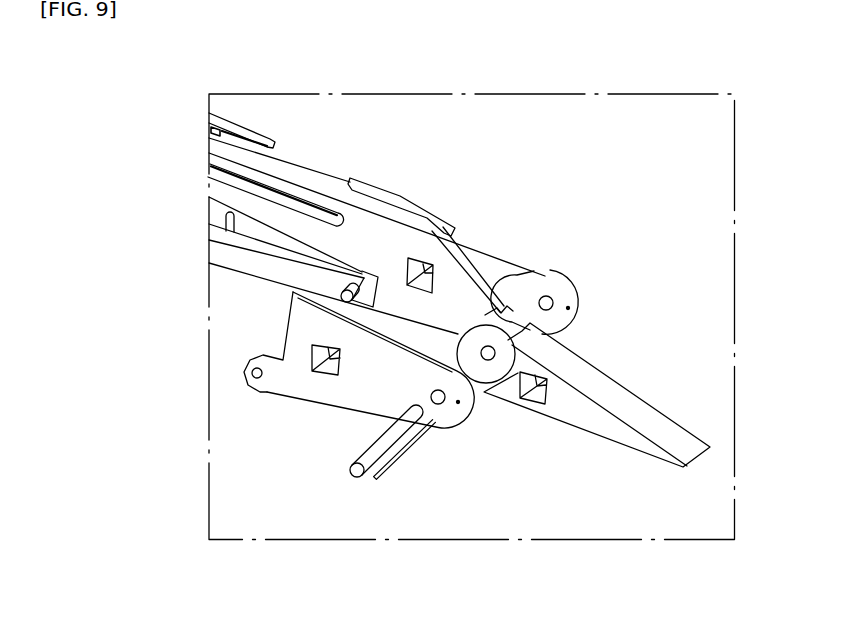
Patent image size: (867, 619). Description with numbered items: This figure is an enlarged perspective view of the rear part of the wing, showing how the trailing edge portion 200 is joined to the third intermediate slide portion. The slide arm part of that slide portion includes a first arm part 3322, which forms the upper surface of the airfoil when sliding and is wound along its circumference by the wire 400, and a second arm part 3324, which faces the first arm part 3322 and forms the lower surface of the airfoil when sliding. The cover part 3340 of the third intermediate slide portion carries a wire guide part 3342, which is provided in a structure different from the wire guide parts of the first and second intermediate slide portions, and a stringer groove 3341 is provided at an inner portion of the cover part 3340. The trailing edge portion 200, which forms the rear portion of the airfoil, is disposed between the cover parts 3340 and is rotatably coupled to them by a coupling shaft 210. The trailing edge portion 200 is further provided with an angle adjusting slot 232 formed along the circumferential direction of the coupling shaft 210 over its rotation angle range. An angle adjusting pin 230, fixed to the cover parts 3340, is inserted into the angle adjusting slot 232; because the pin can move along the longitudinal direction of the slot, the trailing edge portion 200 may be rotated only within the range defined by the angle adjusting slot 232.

The trailing edge portion 200 is at (633, 399).
The coupling shaft 210 is at (357, 467).
The angle adjusting pin 230 is at (396, 460).
The angle adjusting slot 232 is at (512, 356).
The wire 400 is at (412, 202).
The first arm part 3322 is at (286, 180).
The second arm part 3324 is at (257, 262).
The cover part 3340 is at (362, 397).
The stringer groove 3341 is at (328, 358).
The wire guide part 3342 is at (495, 274).